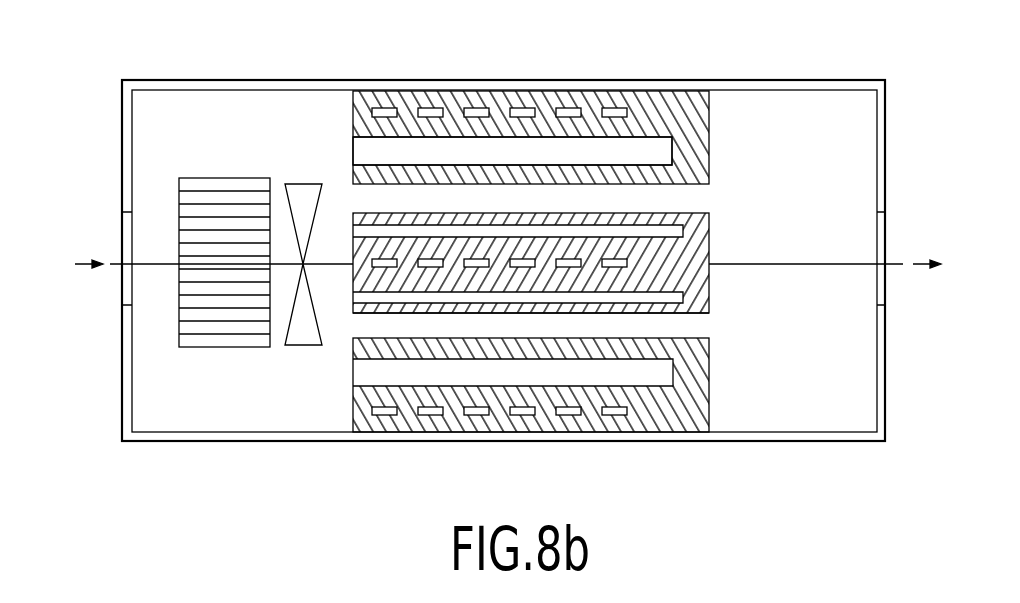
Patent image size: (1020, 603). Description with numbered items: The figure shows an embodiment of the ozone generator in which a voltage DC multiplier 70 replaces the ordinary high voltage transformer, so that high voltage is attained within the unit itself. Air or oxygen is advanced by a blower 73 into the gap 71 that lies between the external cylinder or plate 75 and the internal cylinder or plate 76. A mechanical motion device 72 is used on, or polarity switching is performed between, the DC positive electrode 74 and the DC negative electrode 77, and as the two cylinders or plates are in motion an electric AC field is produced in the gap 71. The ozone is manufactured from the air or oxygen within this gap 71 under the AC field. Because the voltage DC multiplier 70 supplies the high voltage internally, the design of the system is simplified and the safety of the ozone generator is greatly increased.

The voltage DC multiplier 70 is at (717, 441).
The gap 71 is at (370, 202).
The mechanical motion device 72 is at (200, 193).
The blower 73 is at (298, 197).
The DC positive electrode 74 is at (405, 148).
The external cylinder or plate 75 is at (690, 113).
The internal cylinder or plate 76 is at (695, 233).
The DC negative electrode 77 is at (680, 293).